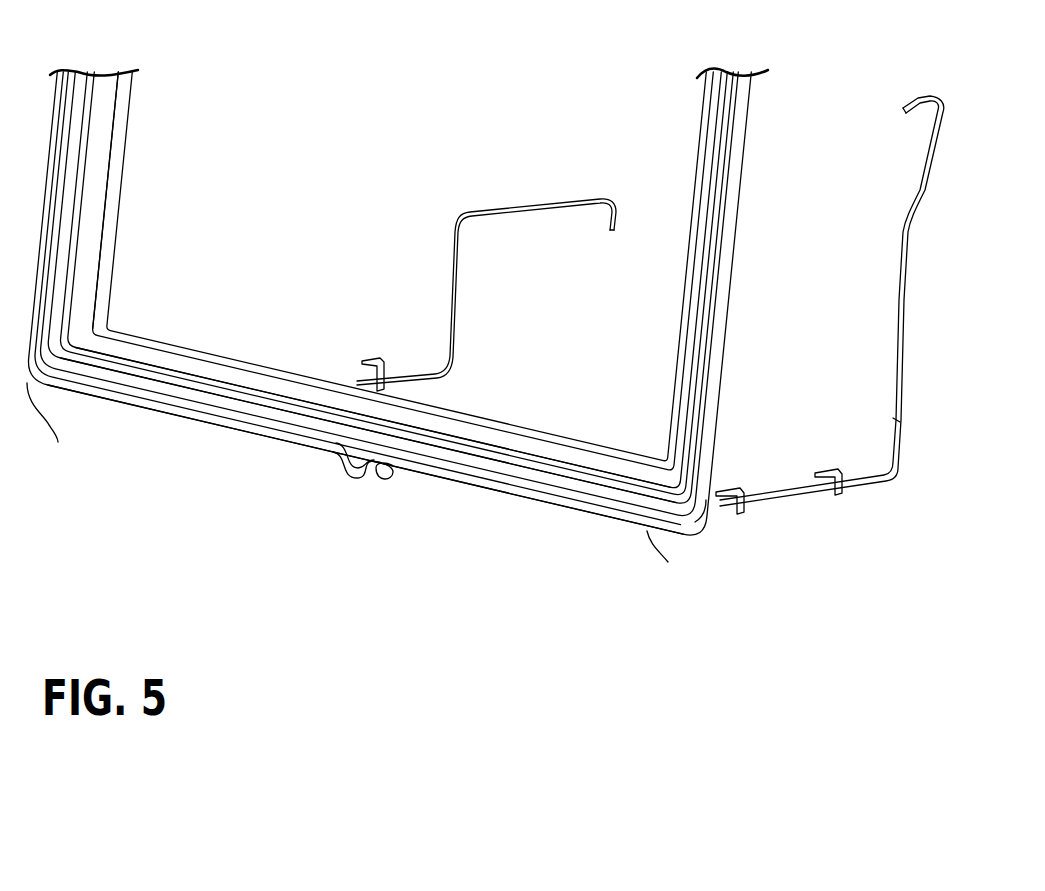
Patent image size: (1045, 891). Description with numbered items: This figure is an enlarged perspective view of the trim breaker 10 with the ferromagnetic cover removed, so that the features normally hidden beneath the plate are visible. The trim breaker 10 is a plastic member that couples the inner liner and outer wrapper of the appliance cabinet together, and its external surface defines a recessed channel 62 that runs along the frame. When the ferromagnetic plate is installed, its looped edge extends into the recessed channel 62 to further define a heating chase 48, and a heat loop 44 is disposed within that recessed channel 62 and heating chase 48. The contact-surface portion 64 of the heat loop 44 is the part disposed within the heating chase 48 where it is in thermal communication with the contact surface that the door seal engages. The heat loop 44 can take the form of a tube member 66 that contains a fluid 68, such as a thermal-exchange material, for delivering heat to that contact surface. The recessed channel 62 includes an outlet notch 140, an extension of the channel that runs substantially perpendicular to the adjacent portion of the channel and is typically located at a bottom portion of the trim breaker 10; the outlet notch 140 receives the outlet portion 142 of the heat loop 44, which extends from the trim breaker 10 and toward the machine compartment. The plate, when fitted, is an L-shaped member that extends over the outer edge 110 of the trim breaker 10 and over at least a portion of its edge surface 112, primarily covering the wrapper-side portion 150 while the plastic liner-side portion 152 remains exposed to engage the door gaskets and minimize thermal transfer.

The trim breaker 10 is at (697, 133).
The heat loop 44 is at (450, 232).
The heating chase 48 is at (614, 519).
The recessed channel 62 is at (50, 427).
The contact-surface portion 64 is at (176, 408).
The tube member 66 is at (898, 321).
The fluid 68 is at (891, 421).
The outer edge 110 is at (660, 536).
The edge surface 112 is at (496, 470).
The outlet notch 140 is at (338, 462).
The outlet portion 142 is at (384, 476).
The wrapper-side portion 150 is at (702, 522).
The liner-side portion 152 is at (106, 260).